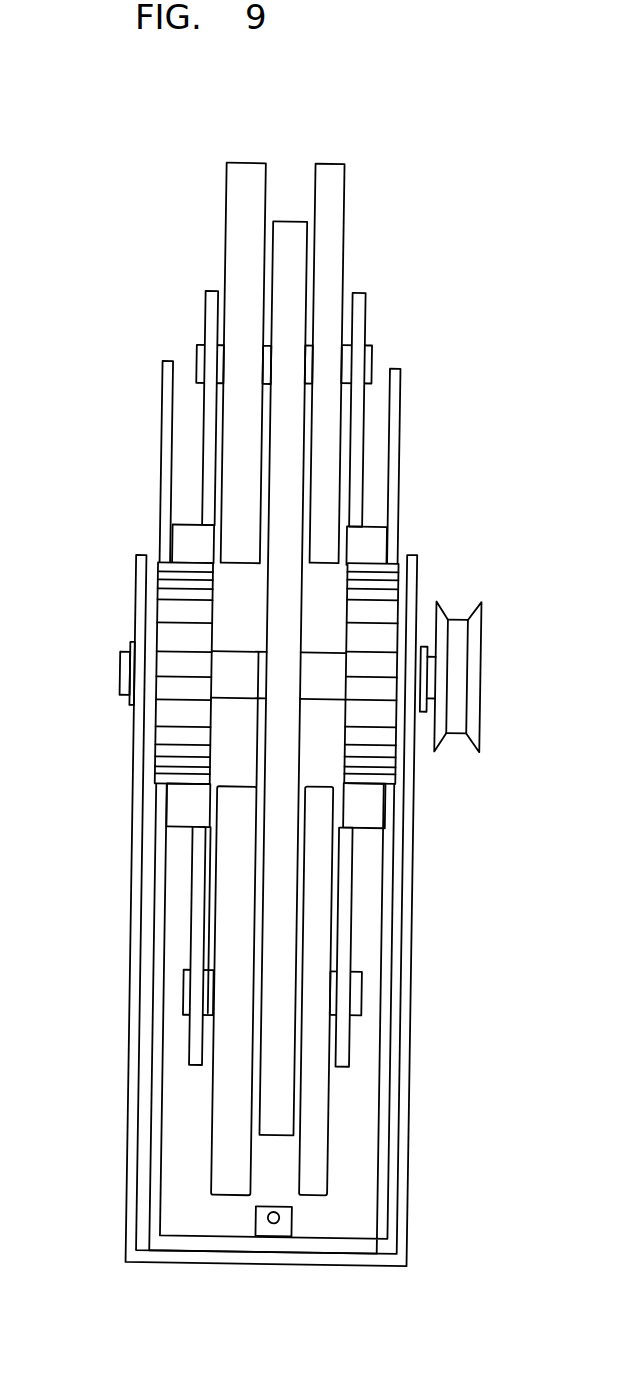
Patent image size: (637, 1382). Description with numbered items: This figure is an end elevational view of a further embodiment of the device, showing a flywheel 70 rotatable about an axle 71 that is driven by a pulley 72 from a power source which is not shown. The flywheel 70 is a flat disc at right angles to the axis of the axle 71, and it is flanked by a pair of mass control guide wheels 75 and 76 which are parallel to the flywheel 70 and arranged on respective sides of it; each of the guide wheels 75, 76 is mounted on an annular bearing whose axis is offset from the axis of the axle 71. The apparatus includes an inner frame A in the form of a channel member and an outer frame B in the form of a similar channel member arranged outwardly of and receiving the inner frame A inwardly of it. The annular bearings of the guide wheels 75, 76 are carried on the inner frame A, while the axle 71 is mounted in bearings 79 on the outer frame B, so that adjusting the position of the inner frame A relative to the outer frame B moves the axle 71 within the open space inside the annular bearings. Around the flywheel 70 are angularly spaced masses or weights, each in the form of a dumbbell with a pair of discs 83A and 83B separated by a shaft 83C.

The flywheel 70 is at (287, 361).
The axle 71 is at (431, 676).
The pulley 72 is at (475, 727).
The mass control guide wheel 75 is at (198, 917).
The mass control guide wheel 76 is at (347, 950).
The bearing 79 is at (130, 705).
The disc 83A is at (216, 1125).
The disc 83B is at (320, 1163).
The shaft 83C is at (218, 1007).
The inner frame A is at (377, 1225).
The outer frame B is at (407, 1178).